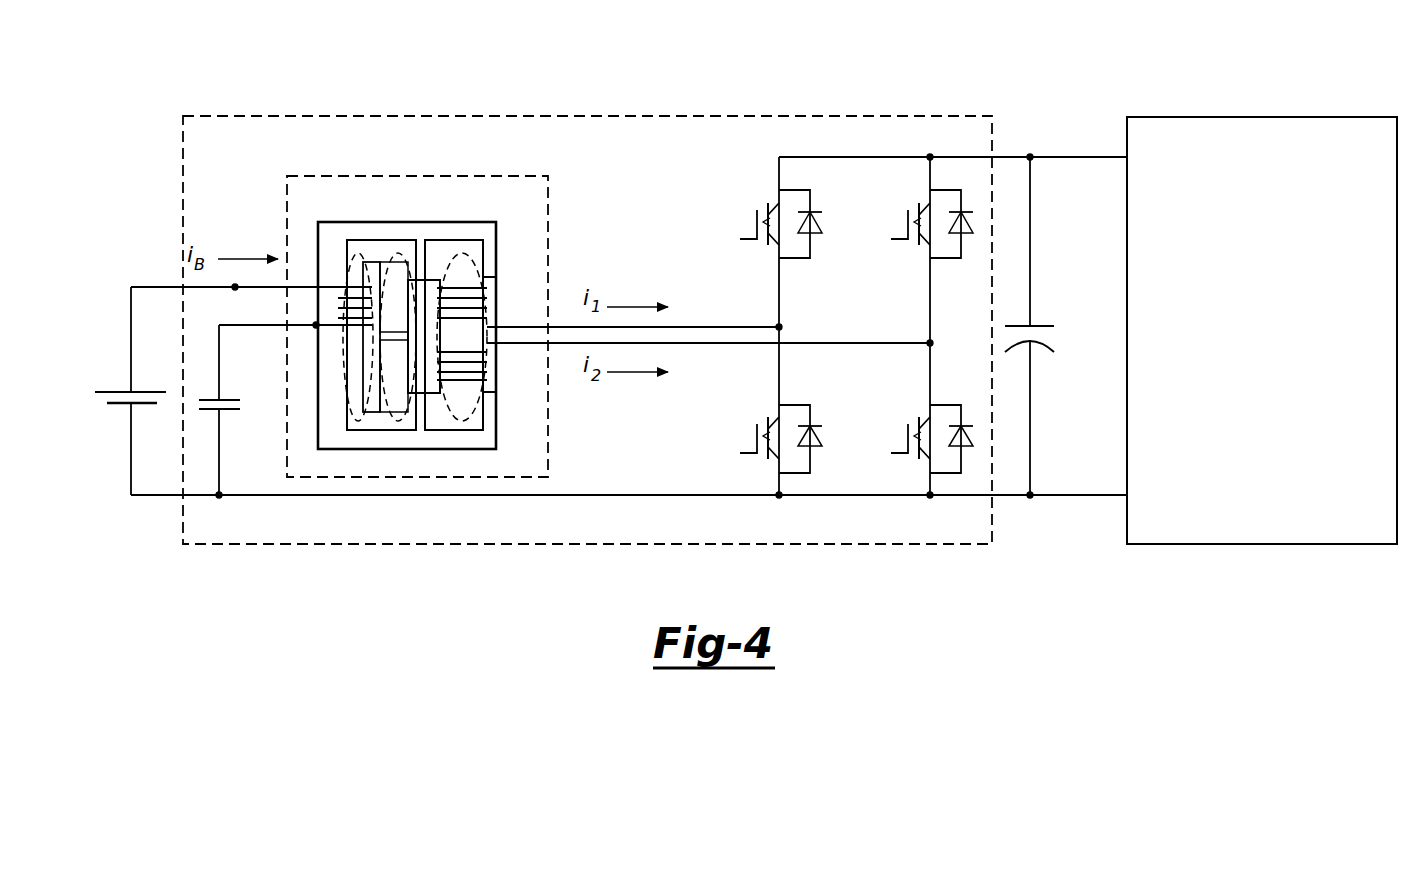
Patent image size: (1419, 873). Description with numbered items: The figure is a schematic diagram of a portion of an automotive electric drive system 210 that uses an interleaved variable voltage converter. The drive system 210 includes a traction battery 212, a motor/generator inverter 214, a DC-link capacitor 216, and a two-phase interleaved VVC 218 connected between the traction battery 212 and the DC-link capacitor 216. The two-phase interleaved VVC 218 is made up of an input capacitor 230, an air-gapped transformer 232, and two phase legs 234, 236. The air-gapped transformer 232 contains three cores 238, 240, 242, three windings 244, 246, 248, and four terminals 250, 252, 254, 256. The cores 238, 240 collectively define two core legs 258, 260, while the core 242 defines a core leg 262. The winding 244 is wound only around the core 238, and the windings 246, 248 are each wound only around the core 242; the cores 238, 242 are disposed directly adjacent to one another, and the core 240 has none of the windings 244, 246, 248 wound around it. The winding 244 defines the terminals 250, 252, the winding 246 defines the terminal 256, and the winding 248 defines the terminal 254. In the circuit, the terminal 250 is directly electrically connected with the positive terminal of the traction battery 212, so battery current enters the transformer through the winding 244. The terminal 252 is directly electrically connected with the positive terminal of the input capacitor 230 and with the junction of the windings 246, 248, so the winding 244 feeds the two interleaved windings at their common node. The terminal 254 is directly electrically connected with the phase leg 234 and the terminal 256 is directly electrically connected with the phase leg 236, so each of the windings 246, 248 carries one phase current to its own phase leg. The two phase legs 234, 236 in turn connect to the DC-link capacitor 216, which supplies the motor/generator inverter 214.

The automotive electric drive system 210 is at (155, 228).
The traction battery 212 is at (122, 392).
The motor/generator inverter 214 is at (1262, 115).
The DC-link capacitor 216 is at (1019, 323).
The two-phase interleaved VVC 218 is at (587, 115).
The input capacitor 230 is at (222, 400).
The air-gapped transformer 232 is at (515, 175).
The phase leg 234 is at (777, 287).
The phase leg 236 is at (930, 308).
The core 238 is at (385, 240).
The core 240 is at (385, 430).
The core 242 is at (455, 240).
The winding 244 is at (300, 287).
The winding 246 is at (333, 477).
The winding 248 is at (497, 243).
The terminal 250 is at (235, 287).
The terminal 252 is at (316, 325).
The terminal 254 is at (780, 325).
The terminal 256 is at (930, 345).
The core leg 258 is at (360, 260).
The core leg 260 is at (396, 430).
The core leg 262 is at (458, 430).